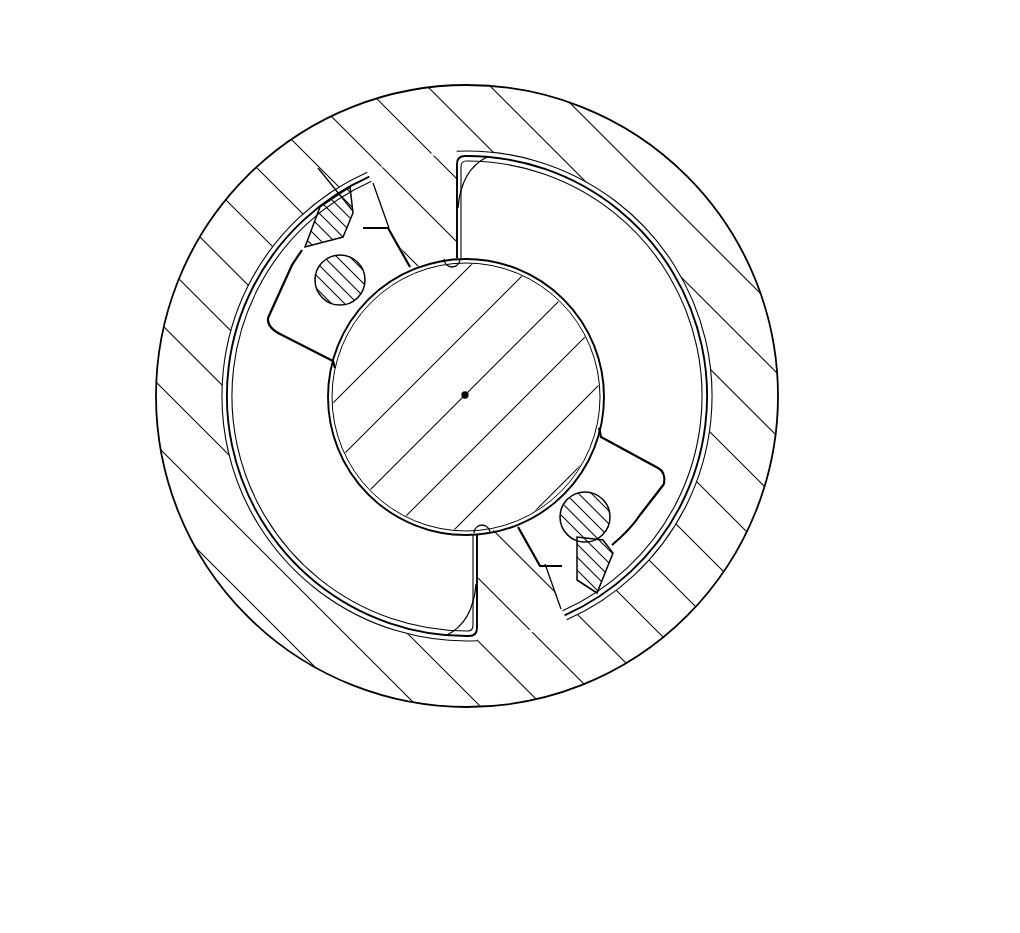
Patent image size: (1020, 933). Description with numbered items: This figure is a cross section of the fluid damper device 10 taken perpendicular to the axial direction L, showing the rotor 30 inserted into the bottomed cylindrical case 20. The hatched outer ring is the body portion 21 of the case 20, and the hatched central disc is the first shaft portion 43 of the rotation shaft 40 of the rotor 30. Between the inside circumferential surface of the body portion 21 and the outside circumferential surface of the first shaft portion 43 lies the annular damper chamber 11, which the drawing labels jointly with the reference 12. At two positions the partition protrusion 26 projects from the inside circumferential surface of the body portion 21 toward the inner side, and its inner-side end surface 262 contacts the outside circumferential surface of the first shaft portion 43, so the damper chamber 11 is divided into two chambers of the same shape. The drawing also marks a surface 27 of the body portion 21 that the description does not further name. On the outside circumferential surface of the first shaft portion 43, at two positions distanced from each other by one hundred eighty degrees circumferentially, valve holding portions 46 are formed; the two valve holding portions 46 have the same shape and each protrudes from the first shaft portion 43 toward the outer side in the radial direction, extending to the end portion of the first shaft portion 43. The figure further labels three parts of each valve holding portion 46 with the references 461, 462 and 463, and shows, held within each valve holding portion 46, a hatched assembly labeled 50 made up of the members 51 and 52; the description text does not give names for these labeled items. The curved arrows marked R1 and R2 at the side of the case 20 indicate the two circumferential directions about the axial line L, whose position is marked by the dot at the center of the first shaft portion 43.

The fluid damper device 10 is at (117, 83).
The annular damper chamber 11 is at (510, 466).
The cover 12 is at (578, 292).
The case 20 is at (170, 540).
The body portion 21 is at (510, 466).
The partition protrusion 26 is at (484, 152).
The inner peripheral surface 27 is at (692, 340).
The rotor 30 is at (598, 348).
The rotation shaft 40 is at (510, 466).
The first shaft portion 43 is at (510, 466).
The valve holding portion 46 is at (298, 355).
The first portion of tab 461 is at (330, 286).
The second portion of tab (hook) 462 is at (378, 247).
The third portion of tab 463 is at (283, 305).
The engaging element 50 is at (172, 93).
The roller 51 is at (274, 276).
The spring 52 is at (308, 232).
The inner-side end surface 262 is at (470, 262).
The axial direction L is at (465, 395).
The rotation direction R1 is at (797, 604).
The rotation direction R2 is at (848, 478).